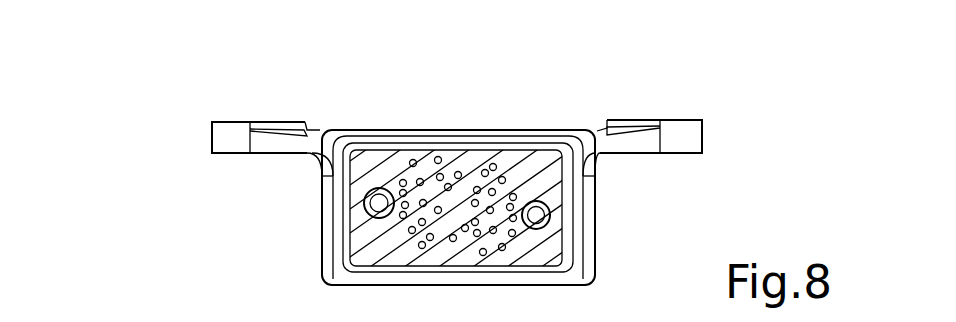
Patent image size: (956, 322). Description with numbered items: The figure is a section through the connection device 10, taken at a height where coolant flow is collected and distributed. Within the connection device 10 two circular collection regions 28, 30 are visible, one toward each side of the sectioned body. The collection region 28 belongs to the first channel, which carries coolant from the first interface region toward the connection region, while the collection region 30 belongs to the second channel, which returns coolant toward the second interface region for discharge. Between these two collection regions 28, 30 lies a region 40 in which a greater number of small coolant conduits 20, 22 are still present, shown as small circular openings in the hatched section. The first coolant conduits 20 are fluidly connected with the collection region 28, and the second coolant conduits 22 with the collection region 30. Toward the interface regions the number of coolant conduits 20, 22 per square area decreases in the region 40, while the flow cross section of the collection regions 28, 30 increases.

The connection device 10 is at (193, 84).
The first coolant conduits 20 is at (412, 159).
The second coolant conduits 22 is at (440, 156).
The region 40 is at (463, 190).
The collection region 28 is at (378, 206).
The collection region 30 is at (536, 215).